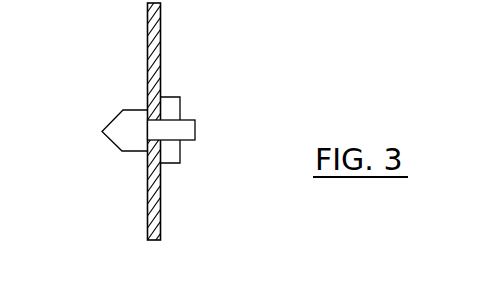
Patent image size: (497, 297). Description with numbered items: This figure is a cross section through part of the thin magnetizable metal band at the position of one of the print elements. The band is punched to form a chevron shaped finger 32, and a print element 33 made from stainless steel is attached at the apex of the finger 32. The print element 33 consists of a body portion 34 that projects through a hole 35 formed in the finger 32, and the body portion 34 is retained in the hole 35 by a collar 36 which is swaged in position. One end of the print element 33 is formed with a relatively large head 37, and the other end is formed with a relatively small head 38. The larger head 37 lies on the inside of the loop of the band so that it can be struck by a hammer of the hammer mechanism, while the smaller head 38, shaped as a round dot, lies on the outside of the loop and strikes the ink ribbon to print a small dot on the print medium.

The chevron shaped finger 32 is at (158, 50).
The print element 33 is at (107, 108).
The body portion 34 is at (110, 148).
The hole 35 is at (148, 160).
The collar 36 is at (170, 108).
The relatively large head 37 is at (197, 132).
The relatively small head 38 is at (100, 131).